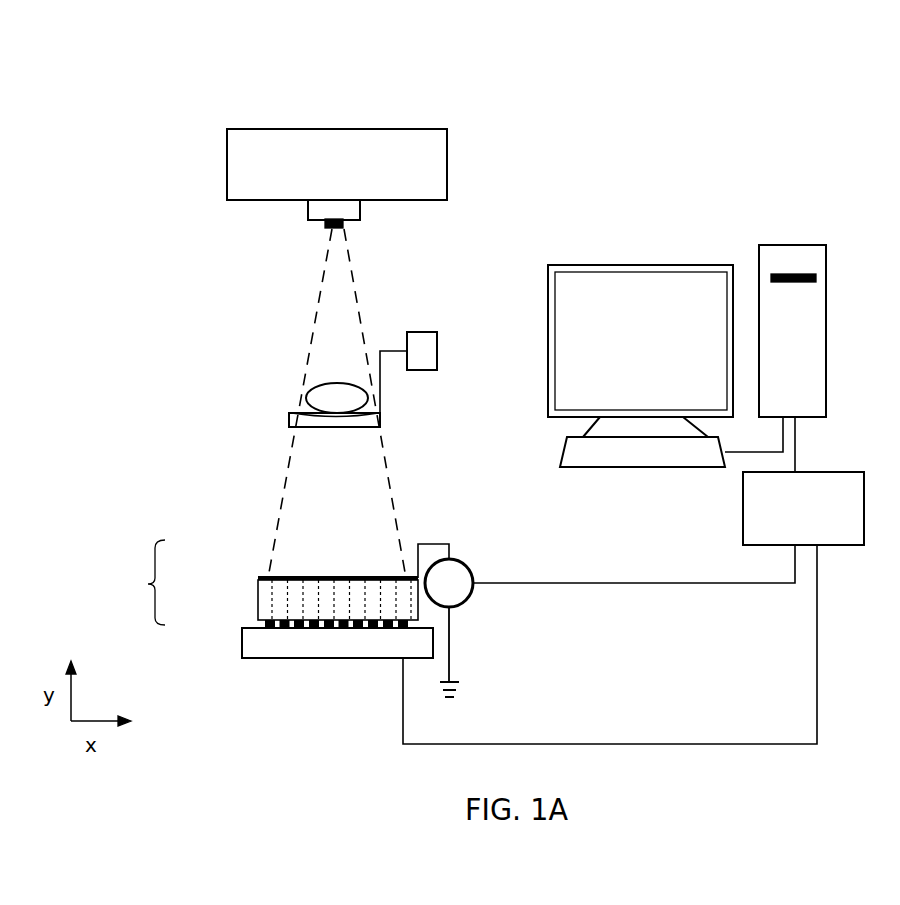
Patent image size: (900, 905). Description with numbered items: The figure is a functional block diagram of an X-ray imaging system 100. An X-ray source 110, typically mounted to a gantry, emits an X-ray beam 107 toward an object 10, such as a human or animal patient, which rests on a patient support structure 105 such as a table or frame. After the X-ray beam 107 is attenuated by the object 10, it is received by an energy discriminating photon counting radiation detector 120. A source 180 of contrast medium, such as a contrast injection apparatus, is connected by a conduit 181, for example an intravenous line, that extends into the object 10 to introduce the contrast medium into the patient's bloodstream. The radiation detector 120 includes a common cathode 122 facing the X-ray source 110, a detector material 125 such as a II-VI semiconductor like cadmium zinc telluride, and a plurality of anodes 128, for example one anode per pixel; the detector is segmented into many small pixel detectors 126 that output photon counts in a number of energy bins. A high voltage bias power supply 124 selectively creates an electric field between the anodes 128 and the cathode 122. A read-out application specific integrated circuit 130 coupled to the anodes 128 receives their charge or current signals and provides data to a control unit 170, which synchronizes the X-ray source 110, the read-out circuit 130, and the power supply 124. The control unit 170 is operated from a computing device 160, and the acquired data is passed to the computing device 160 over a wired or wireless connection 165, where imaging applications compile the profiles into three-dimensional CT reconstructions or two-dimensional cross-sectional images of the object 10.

The X-ray imaging system 100 is at (717, 103).
The X-ray source 110 is at (337, 178).
The X-ray beam 107 is at (340, 327).
The object 10 is at (315, 388).
The patient support structure 105 is at (381, 421).
The source of contrast medium 180 is at (437, 350).
The conduit 181 is at (381, 388).
The radiation detector 120 is at (148, 585).
The cathode 122 is at (259, 578).
The detector material 125 is at (259, 602).
The anode 128 is at (258, 623).
The pixel detectors 126 is at (282, 583).
The read-out application specific integrated circuit 130 is at (360, 659).
The high voltage bias power supply 124 is at (467, 600).
The connection 165 is at (686, 583).
The control unit 170 is at (803, 481).
The computing device 160 is at (687, 356).